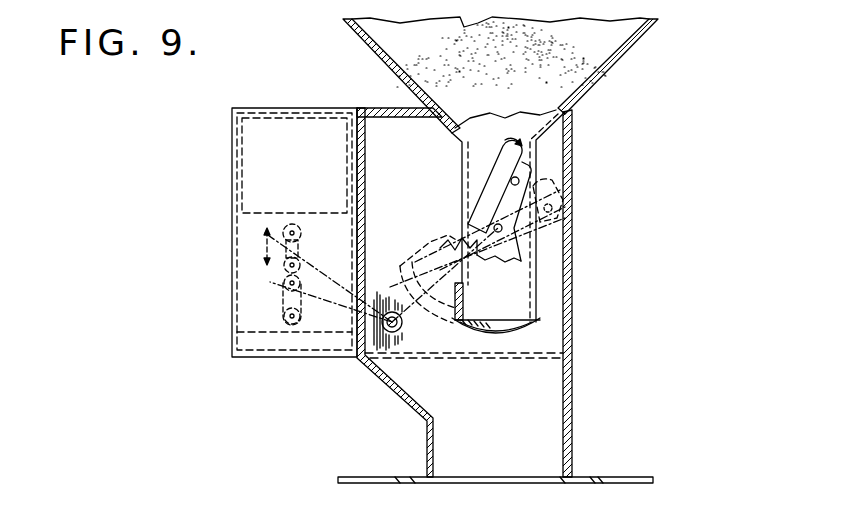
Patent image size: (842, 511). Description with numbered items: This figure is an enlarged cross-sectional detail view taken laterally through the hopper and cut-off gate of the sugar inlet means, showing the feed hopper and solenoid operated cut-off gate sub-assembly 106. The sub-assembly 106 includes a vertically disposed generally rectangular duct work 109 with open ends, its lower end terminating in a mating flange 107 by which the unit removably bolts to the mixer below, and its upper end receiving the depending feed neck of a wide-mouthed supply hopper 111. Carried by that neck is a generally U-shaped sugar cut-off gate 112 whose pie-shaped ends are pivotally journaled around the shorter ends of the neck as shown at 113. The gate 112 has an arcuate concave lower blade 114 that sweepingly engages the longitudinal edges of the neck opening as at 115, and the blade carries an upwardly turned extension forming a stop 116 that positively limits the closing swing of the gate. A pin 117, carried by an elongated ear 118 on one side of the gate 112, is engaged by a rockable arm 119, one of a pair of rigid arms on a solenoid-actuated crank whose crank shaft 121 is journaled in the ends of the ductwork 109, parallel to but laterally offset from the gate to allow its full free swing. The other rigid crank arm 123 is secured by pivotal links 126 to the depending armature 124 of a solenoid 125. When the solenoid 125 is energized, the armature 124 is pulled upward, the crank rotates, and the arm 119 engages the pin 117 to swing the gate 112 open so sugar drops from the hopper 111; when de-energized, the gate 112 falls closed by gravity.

The supply hopper 111 is at (623, 56).
The feed hopper and solenoid operated cut-off gate sub-assembly 106 is at (586, 102).
The pin 117 is at (506, 162).
The rockable arm 119 is at (488, 182).
The pivotal journal of gate ends 113 is at (497, 225).
The elongated ear 118 is at (522, 166).
The arcuate concave lower blade 114 is at (520, 340).
The stop 116 is at (462, 290).
The engagement of blade with neck opening edges 115 is at (523, 314).
The crank shaft 121 is at (403, 322).
The sugar cut-off gate 112 is at (492, 330).
The duct work 109 is at (572, 370).
The mating flange 107 is at (595, 476).
The rigid crank arm 123 is at (313, 335).
The armature 124 is at (306, 248).
The solenoid 125 is at (316, 176).
The pivotal links 126 is at (287, 306).